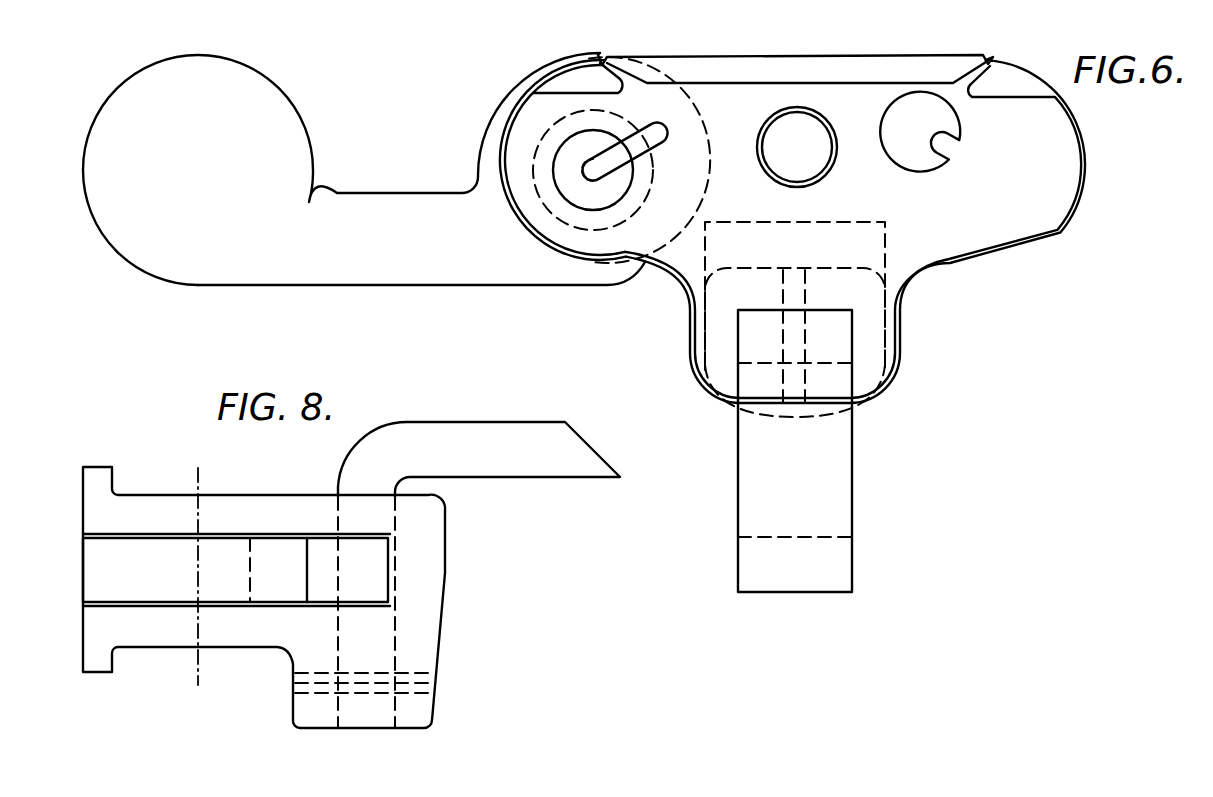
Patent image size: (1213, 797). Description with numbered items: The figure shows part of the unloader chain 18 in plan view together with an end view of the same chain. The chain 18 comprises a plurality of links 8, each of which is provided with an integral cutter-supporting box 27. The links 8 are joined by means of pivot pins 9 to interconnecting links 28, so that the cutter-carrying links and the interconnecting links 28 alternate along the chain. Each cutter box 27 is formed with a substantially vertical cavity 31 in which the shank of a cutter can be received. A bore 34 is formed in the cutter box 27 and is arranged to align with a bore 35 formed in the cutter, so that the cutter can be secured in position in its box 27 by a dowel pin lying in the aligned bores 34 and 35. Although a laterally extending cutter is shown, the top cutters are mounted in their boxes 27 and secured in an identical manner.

In FIG. 6, the chain 18 is at (383, 120).
In FIG. 8, the chain 18 is at (155, 483).
In FIG. 6, the link 8 is at (905, 112).
In FIG. 6, the pivot pin 9 is at (617, 181).
In FIG. 6, the cutter-supporting box 27 is at (890, 312).
In FIG. 8, the cutter-supporting box 27 is at (420, 533).
In FIG. 6, the interconnecting link 28 is at (423, 253).
In FIG. 8, the interconnecting link 28 is at (142, 570).
In FIG. 8, the cavity 31 is at (390, 656).
In FIG. 8, the bore 34 is at (296, 684).
In FIG. 8, the bore 35 is at (437, 682).